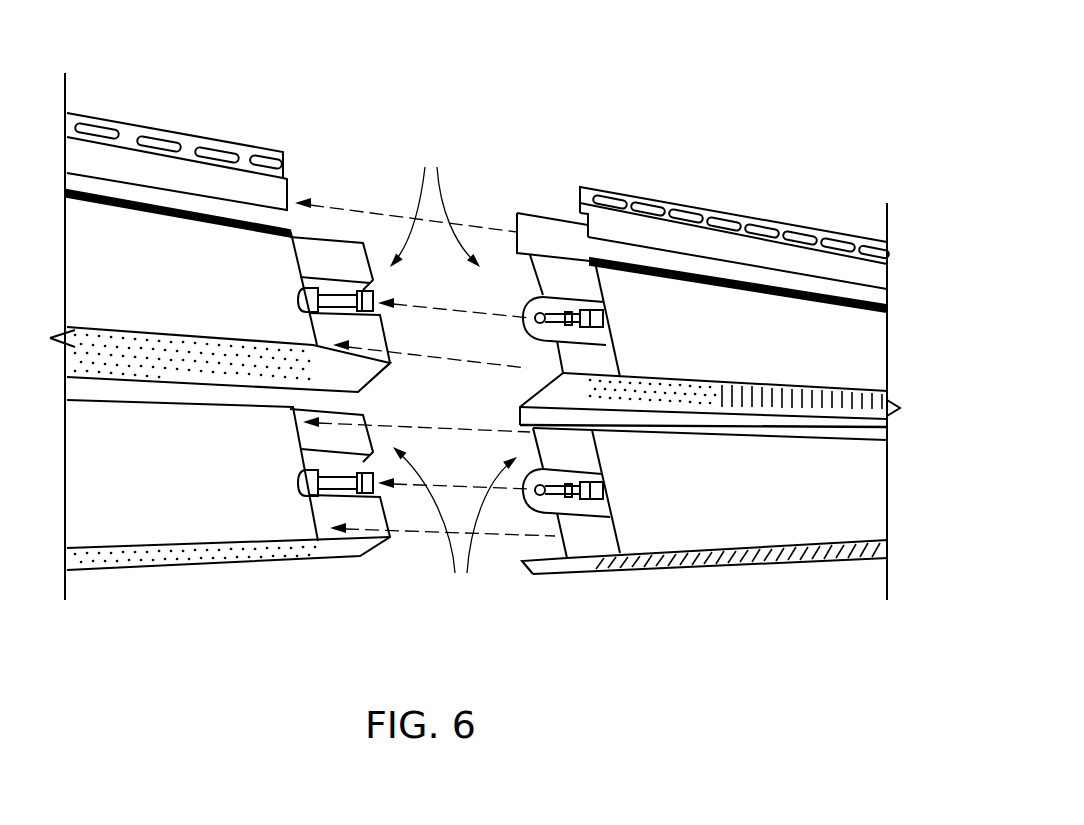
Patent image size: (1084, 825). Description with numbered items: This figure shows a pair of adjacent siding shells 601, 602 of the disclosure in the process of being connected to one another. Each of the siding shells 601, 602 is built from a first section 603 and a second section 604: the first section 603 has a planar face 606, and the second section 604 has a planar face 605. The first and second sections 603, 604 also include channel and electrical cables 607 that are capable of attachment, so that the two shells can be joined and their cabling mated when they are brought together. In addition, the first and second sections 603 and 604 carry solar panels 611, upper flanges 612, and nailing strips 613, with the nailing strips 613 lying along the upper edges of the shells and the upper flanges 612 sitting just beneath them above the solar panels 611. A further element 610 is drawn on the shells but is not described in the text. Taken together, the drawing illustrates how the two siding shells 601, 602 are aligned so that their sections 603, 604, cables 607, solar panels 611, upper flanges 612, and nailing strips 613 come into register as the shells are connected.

The siding shell 601 is at (127, 100).
The siding shell 602 is at (763, 192).
The first section 603 is at (435, 205).
The second section 604 is at (455, 524).
The planar face 605 is at (553, 450).
The planar face 606 is at (577, 345).
The channel and electrical cables 607 is at (533, 573).
The nailing hem tab 610 is at (558, 226).
The solar panel 611 is at (860, 358).
The upper flange 612 is at (860, 270).
The nailing strip 613 is at (833, 233).